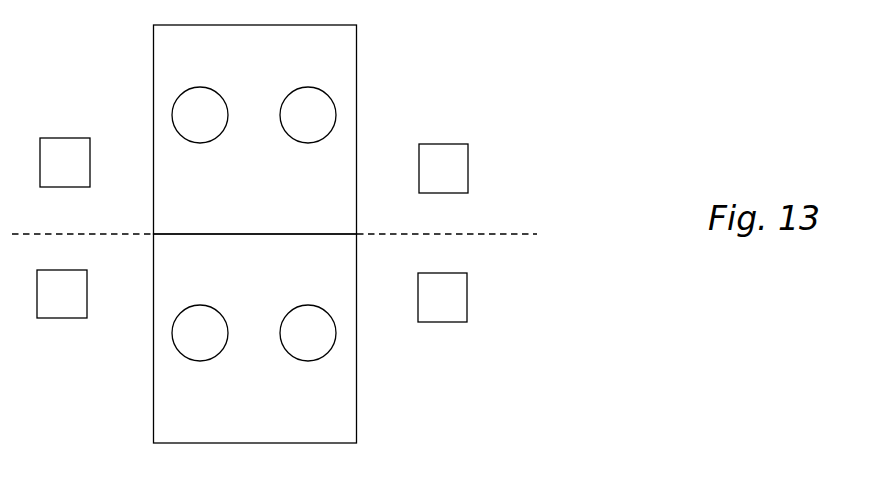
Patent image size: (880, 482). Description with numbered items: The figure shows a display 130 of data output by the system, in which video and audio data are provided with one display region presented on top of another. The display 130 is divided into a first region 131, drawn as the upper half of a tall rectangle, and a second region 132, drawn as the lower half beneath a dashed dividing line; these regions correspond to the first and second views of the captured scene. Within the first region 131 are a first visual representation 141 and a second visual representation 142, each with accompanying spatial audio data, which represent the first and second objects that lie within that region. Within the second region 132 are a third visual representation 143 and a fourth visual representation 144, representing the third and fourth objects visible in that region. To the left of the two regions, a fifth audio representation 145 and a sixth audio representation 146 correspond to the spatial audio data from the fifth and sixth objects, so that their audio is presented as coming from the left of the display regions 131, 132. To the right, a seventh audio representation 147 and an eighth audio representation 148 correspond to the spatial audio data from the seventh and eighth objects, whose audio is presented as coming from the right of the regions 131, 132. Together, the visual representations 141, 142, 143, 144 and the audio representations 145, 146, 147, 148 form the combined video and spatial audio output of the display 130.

The display 130 is at (600, 415).
The first region 131 is at (363, 88).
The second region 132 is at (357, 408).
The first visual representation 141 is at (202, 84).
The second visual representation 142 is at (311, 84).
The third visual representation 143 is at (216, 290).
The fourth visual representation 144 is at (312, 305).
The fifth audio representation 145 is at (85, 122).
The sixth audio representation 146 is at (67, 320).
The seventh audio representation 147 is at (468, 164).
The eighth audio representation 148 is at (467, 305).